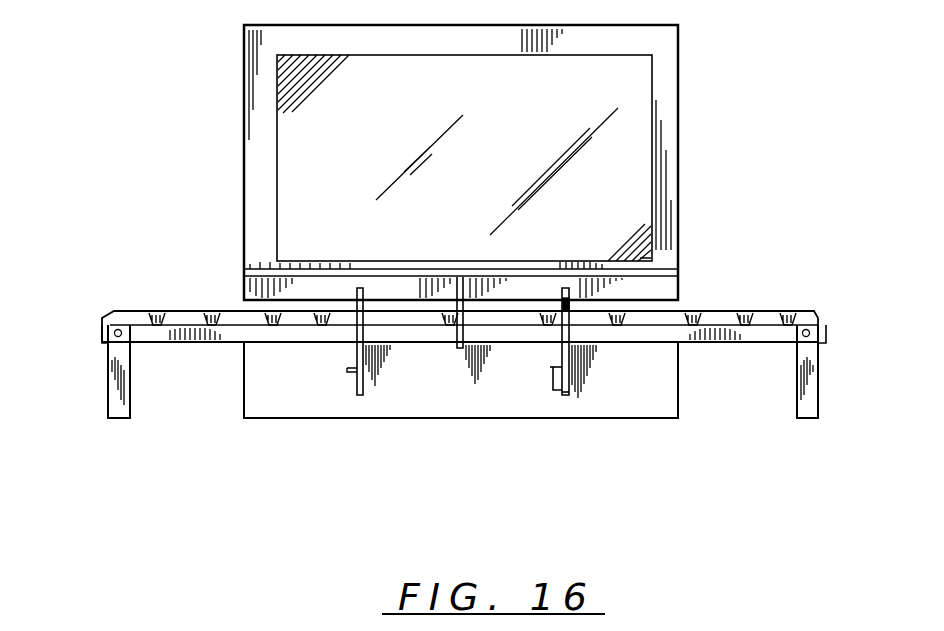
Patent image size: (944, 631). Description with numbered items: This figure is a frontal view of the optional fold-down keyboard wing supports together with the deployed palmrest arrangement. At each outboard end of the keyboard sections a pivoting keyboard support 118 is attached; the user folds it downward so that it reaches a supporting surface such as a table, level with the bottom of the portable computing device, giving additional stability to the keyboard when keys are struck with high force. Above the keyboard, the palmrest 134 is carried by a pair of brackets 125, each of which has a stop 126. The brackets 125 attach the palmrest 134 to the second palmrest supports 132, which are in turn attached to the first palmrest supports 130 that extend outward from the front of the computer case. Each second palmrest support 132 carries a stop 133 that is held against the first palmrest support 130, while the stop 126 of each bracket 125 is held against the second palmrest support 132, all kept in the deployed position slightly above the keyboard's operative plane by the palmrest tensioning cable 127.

The pivoting keyboard support 118 is at (117, 402).
The bracket 125 is at (572, 303).
The stop 126 is at (567, 308).
The palmrest tensioning cable 127 is at (457, 292).
The first palmrest support 130 is at (558, 394).
The second palmrest support 132 is at (563, 394).
The stop 133 is at (553, 369).
The palmrest 134 is at (673, 272).